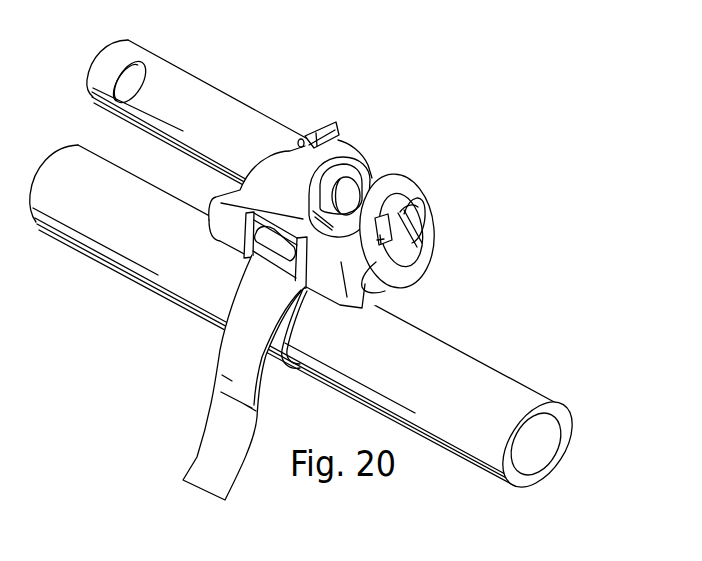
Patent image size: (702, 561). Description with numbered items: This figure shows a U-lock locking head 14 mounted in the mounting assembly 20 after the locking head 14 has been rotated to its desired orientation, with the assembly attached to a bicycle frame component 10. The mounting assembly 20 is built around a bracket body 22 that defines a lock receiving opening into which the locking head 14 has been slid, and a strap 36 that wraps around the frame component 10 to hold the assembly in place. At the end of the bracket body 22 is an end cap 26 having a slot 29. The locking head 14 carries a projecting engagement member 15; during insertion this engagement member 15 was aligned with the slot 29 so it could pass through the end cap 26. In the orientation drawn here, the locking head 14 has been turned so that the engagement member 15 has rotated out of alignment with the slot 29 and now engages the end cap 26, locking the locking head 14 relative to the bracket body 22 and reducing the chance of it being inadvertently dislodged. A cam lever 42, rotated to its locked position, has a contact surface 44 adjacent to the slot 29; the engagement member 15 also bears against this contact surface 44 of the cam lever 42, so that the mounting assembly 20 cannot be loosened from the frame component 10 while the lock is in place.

The bicycle frame component 10 is at (534, 393).
The locking head 14 is at (179, 69).
The mounting assembly 20 is at (315, 123).
The bracket body 22 is at (340, 153).
The end cap 26 is at (386, 175).
The slot 29 is at (380, 242).
The engagement member 15 is at (410, 237).
The cam lever 42 is at (425, 219).
The contact surface 44 is at (412, 212).
The strap 36 is at (218, 410).